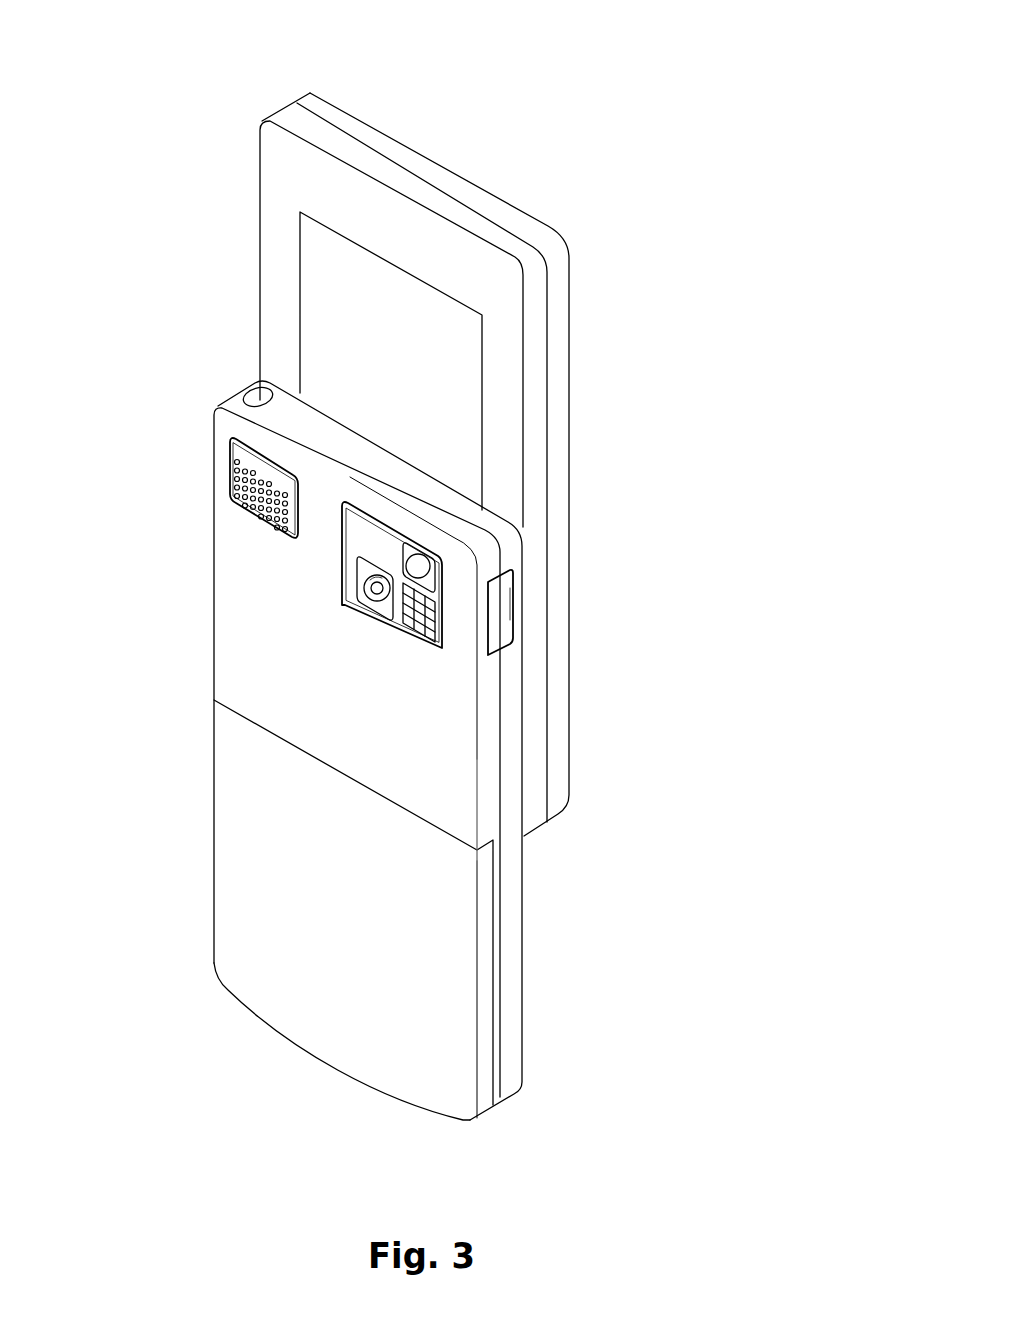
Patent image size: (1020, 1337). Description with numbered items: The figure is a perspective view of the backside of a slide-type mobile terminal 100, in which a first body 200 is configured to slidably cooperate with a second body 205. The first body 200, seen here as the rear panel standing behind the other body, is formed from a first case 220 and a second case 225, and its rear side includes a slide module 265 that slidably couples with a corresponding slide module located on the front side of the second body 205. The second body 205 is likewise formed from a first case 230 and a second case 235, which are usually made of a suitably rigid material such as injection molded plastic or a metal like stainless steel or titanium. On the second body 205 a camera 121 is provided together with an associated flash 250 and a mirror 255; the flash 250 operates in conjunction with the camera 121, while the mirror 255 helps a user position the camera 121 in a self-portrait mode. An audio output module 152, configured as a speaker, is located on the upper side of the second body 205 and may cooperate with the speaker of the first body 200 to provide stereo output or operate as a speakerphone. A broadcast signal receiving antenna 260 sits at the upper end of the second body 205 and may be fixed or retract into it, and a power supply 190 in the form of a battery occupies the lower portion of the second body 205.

The mobile terminal 100 is at (644, 106).
The first body 200 is at (218, 251).
The second body 205 is at (178, 595).
The first case 220 is at (292, 99).
The second case 225 is at (281, 114).
The slide module 265 is at (300, 333).
The broadcast signal receiving antenna 260 is at (237, 389).
The audio output module 152 is at (233, 483).
The flash 250 is at (442, 648).
The camera 121 is at (378, 590).
The mirror 255 is at (422, 565).
The power supply 190 is at (228, 797).
The second case 235 is at (488, 803).
The first case 230 is at (513, 868).